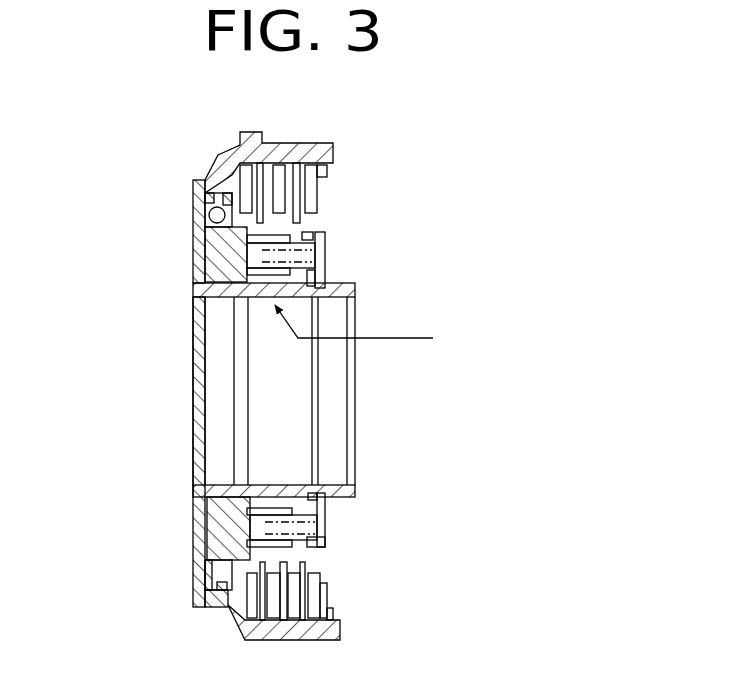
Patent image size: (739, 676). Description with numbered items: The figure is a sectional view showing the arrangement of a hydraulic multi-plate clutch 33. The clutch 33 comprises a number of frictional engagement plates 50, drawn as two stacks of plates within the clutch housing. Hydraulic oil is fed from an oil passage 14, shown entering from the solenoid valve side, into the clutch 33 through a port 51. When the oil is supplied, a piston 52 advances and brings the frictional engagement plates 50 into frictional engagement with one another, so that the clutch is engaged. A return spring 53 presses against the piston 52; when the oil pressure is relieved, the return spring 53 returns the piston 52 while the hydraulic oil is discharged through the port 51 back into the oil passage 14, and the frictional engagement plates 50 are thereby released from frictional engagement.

The clutch 33 is at (125, 225).
The frictional engagement plates 50 is at (326, 193).
The port 51 is at (262, 298).
The piston 52 is at (218, 528).
The return spring 53 is at (297, 533).
The oil passage 14 is at (398, 336).